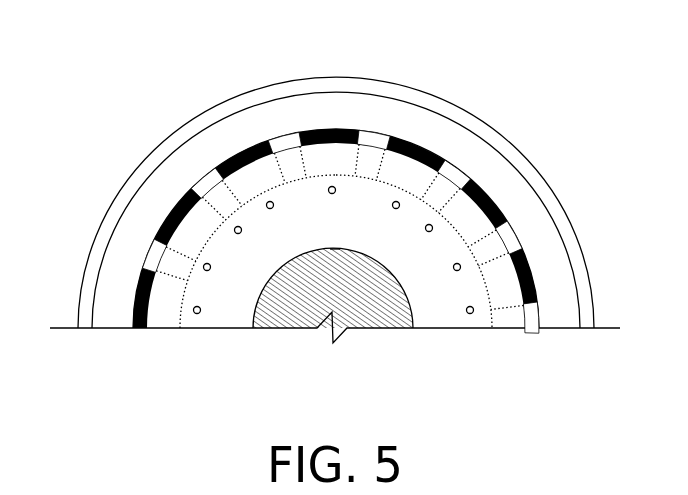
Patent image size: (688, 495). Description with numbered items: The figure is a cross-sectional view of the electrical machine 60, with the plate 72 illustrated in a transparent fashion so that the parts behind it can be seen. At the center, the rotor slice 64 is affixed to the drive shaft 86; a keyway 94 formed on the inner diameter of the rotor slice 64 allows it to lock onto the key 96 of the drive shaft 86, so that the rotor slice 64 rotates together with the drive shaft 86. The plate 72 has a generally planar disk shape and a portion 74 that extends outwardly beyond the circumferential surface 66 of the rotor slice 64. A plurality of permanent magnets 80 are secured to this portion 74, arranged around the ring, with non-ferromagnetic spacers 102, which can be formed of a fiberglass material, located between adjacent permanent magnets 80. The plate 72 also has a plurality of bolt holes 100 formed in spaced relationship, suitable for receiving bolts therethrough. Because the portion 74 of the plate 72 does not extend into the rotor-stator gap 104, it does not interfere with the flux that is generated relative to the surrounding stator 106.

The electrical machine 60 is at (605, 149).
The rotor slice 64 is at (215, 322).
The circumferential surface 66 is at (437, 153).
The plate 72 is at (437, 322).
The portion 74 is at (463, 210).
The permanent magnet 80 is at (170, 212).
The drive shaft 86 is at (295, 322).
The keyway 94 is at (335, 247).
The key 96 is at (335, 247).
The bolt holes 100 is at (211, 266).
The non-ferromagnetic spacers 102 is at (205, 180).
The rotor-stator gap 104 is at (322, 115).
The stator 106 is at (93, 262).